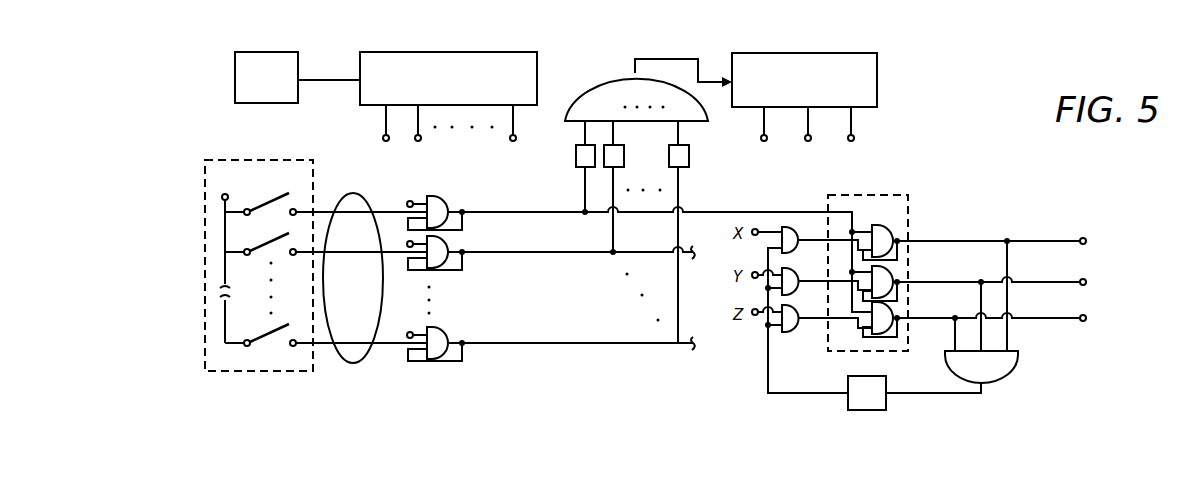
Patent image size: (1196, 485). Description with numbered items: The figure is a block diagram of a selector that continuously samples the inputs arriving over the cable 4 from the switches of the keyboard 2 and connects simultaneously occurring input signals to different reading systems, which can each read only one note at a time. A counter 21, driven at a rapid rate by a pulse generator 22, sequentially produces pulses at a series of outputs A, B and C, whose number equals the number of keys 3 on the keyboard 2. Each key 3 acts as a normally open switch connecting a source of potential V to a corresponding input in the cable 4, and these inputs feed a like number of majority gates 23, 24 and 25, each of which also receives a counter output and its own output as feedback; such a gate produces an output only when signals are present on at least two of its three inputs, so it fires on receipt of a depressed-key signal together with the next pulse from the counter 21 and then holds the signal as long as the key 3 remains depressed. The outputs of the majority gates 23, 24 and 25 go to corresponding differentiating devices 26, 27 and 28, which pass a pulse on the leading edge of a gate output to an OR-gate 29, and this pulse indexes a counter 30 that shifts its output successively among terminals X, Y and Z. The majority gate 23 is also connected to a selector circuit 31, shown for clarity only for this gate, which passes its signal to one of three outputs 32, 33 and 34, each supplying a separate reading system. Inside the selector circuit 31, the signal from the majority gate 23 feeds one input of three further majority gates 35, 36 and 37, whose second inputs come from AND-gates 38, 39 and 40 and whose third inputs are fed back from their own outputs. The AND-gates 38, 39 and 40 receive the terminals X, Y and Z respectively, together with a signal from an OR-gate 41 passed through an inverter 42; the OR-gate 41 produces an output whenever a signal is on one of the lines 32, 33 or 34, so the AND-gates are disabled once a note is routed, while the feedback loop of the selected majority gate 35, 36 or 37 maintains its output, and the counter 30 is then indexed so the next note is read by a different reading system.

The keyboard 2 is at (231, 265).
The key 3 is at (273, 200).
The cable 4 is at (355, 362).
The counter 21 is at (463, 51).
The pulse generator 22 is at (235, 62).
The majority gate 23 is at (438, 197).
The majority gate 24 is at (448, 243).
The majority gate 25 is at (440, 328).
The differentiating device 26 is at (576, 157).
The differentiating device 27 is at (624, 152).
The differentiating device 28 is at (689, 156).
The OR-gate 29 is at (601, 88).
The counter 30 is at (877, 89).
The selector circuit 31 is at (886, 257).
The output 32 is at (1086, 240).
The output 33 is at (1086, 281).
The output 34 is at (1086, 318).
The majority gate 35 is at (892, 218).
The majority gate 36 is at (889, 268).
The majority gate 37 is at (867, 338).
The AND-gate 38 is at (790, 254).
The AND-gate 39 is at (790, 296).
The AND-gate 40 is at (788, 333).
The OR-gate 41 is at (992, 383).
The inverter 42 is at (853, 410).